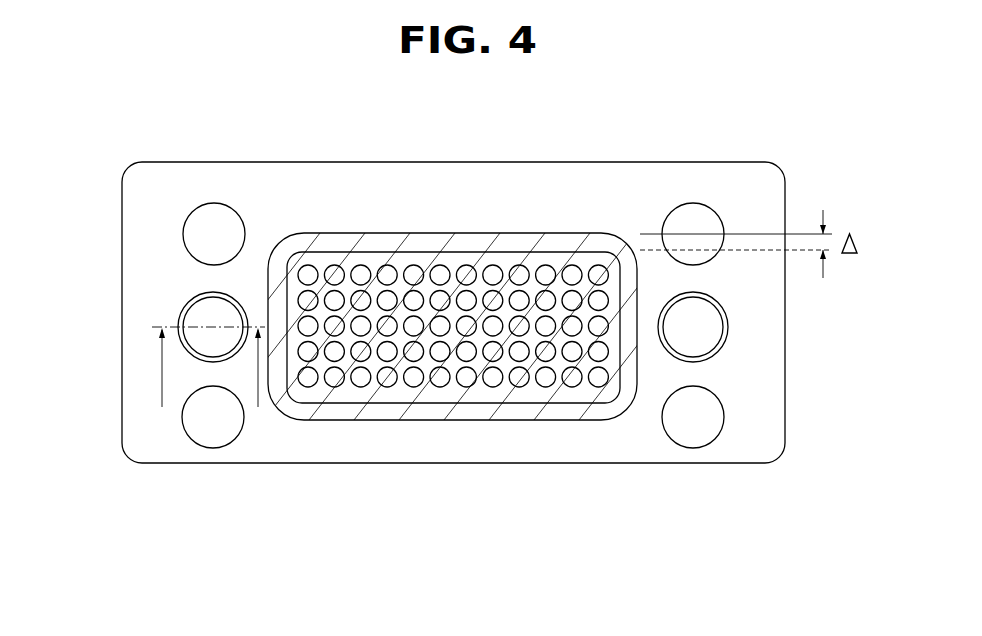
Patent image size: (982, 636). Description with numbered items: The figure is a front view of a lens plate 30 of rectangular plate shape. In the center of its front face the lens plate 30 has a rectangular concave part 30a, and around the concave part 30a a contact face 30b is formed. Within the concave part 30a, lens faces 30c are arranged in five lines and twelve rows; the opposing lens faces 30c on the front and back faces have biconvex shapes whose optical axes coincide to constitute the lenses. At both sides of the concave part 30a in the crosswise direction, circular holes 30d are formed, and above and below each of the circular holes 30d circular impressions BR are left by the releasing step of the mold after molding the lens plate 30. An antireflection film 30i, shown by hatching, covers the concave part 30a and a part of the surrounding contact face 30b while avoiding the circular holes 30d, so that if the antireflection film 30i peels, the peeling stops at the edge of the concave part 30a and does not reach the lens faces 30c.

The lens plate 30 is at (775, 460).
The concave part 30a is at (460, 260).
The contact face 30b is at (546, 195).
The lens faces 30c is at (412, 387).
The circular holes 30d is at (195, 296).
The antireflection film 30i is at (596, 236).
The circular impressions BR is at (218, 203).